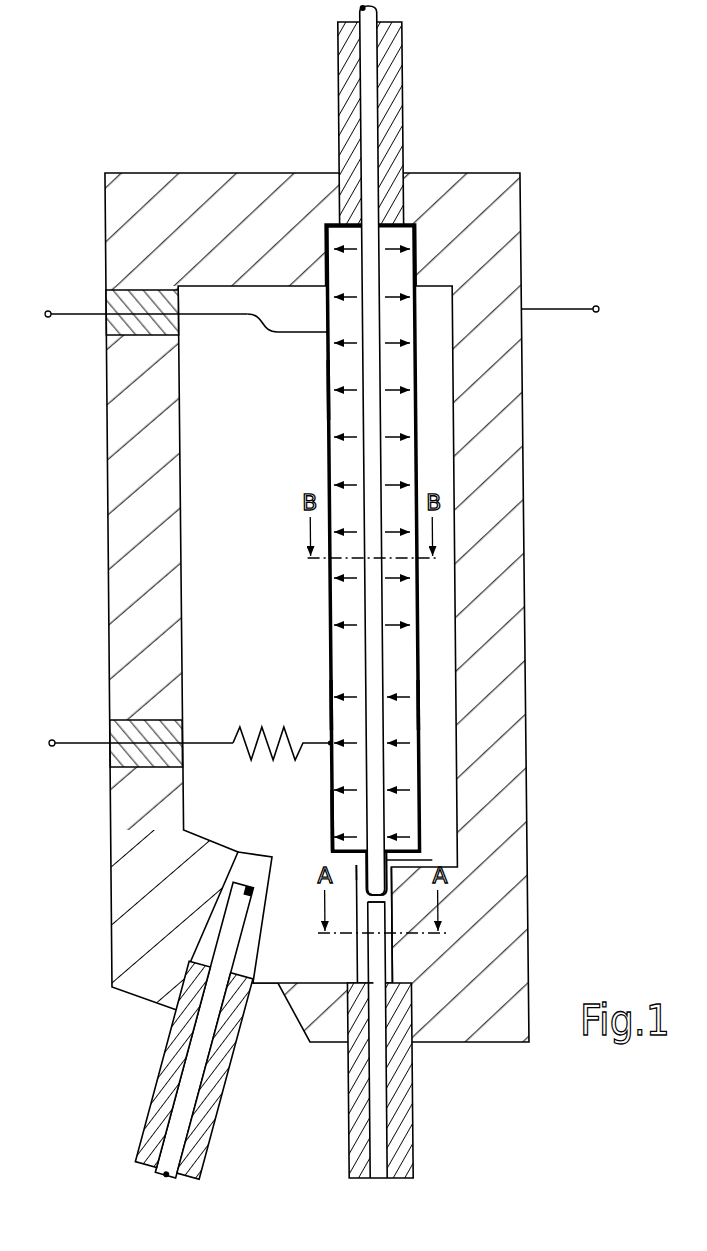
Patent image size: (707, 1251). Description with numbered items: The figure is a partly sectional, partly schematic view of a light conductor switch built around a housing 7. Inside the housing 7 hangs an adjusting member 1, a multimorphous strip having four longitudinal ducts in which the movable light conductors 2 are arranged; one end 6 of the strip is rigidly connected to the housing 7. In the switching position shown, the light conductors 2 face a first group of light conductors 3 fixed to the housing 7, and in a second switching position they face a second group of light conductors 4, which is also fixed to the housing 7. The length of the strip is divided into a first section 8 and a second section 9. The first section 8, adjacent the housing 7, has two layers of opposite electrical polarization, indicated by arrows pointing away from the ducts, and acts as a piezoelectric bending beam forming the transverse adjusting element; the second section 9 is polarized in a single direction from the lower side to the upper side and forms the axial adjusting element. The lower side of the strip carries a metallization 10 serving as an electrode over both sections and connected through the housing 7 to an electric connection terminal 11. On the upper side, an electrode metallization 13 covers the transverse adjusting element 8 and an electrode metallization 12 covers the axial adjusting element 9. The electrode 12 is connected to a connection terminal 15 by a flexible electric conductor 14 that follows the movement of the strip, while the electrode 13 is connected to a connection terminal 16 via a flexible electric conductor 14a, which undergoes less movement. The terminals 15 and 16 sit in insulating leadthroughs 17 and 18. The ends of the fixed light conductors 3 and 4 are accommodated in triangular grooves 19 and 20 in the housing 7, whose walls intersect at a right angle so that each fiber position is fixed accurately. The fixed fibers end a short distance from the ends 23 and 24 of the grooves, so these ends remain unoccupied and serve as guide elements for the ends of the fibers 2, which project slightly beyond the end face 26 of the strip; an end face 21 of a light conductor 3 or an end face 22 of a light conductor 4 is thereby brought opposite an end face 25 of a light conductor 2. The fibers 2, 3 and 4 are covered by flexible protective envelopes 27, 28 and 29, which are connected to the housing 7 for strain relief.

The adjusting member 1 is at (329, 660).
The light conductor 2 is at (366, 465).
The first group of light conductors 3 is at (378, 1100).
The second group of light conductors 4 is at (186, 1088).
The end of the multimorphous strip 6 is at (343, 242).
The housing 7 is at (513, 437).
The first section of the multimorphous strip 8 is at (345, 470).
The second section of the multimorphous strip 9 is at (350, 817).
The metallization 10 is at (418, 703).
The electric connection terminal 11 is at (578, 309).
The electrode metallization 12 is at (329, 705).
The electrode metallization 13 is at (330, 398).
The flexible electric conductor 14 is at (261, 726).
The flexible electric conductor 14a is at (270, 320).
The connection terminal 15 is at (137, 725).
The connection terminal 16 is at (133, 314).
The insulating leadthrough 17 is at (119, 753).
The insulating leadthrough 18 is at (119, 323).
The triangular groove 19 is at (362, 958).
The triangular groove 20 is at (246, 942).
The end face 21 is at (374, 903).
The end face 22 is at (250, 891).
The end of the groove 23 is at (354, 863).
The end of the groove 24 is at (260, 856).
The end face 25 is at (430, 860).
The end face of the multimorphous strip 26 is at (364, 858).
The flexible protective envelope 27 is at (397, 83).
The flexible protective envelope 28 is at (398, 1127).
The flexible protective envelope 29 is at (208, 1114).